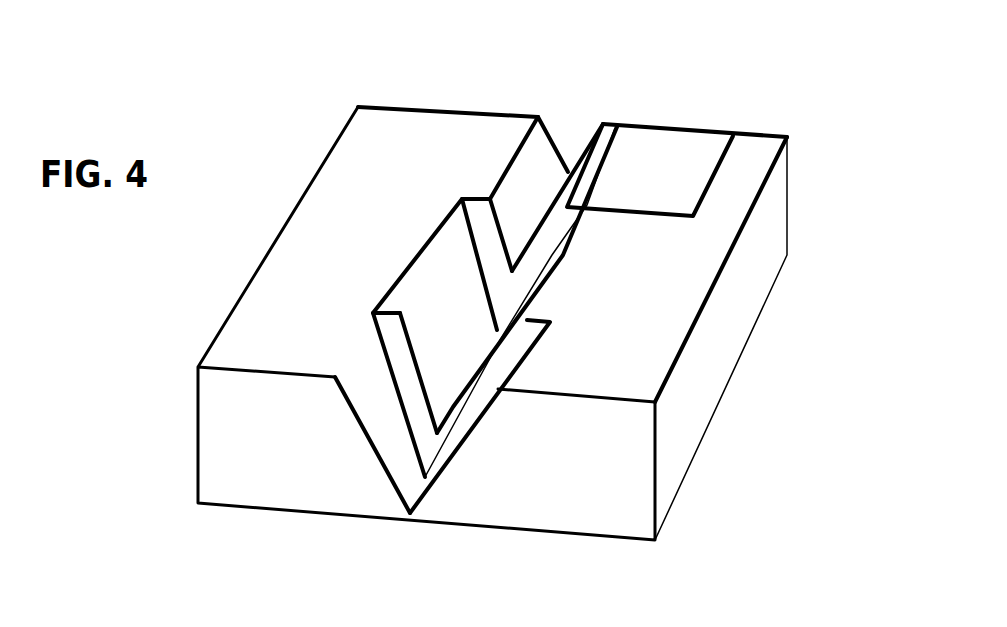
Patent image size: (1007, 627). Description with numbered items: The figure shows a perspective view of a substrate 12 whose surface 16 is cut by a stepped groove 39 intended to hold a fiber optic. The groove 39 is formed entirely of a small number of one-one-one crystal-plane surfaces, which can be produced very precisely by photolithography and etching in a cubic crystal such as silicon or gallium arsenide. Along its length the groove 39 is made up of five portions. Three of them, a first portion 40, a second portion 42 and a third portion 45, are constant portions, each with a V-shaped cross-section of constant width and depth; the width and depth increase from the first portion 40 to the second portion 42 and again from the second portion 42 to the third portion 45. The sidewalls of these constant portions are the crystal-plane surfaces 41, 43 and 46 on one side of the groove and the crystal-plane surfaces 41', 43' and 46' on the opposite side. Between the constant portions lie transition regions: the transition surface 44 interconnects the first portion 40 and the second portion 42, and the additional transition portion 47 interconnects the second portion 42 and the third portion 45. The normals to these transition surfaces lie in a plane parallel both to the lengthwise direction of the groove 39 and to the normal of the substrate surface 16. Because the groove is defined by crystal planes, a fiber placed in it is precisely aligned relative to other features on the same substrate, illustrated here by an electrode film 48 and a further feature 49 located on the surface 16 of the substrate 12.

The substrate 12 is at (638, 500).
The substrate surface 16 is at (755, 162).
The groove 39 is at (572, 127).
The first portion 40 is at (497, 150).
The 111 surface 41 is at (414, 129).
The second portion 42 is at (456, 333).
The 111 surface 43 is at (329, 316).
The transition surface 44 is at (478, 232).
The third portion 45 is at (352, 335).
The 111 surface 46 is at (334, 405).
The transition portion 47 is at (390, 327).
The electrode film 48 is at (612, 145).
The feature 49 is at (687, 147).
The 111 surface 41' is at (687, 197).
The 111 surface 43' is at (642, 280).
The 111 surface 46' is at (619, 302).